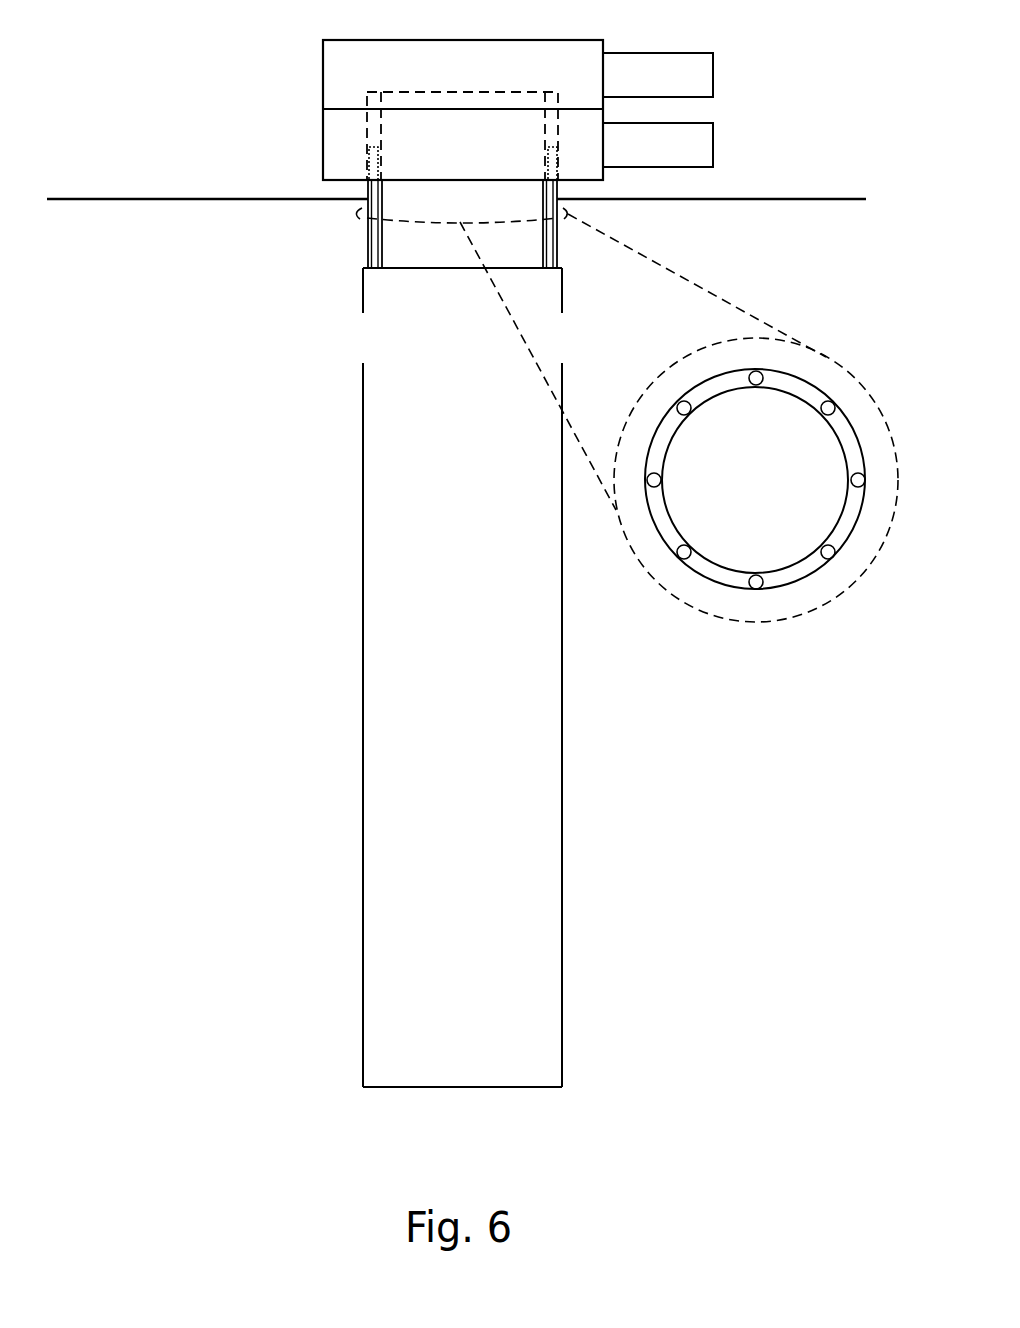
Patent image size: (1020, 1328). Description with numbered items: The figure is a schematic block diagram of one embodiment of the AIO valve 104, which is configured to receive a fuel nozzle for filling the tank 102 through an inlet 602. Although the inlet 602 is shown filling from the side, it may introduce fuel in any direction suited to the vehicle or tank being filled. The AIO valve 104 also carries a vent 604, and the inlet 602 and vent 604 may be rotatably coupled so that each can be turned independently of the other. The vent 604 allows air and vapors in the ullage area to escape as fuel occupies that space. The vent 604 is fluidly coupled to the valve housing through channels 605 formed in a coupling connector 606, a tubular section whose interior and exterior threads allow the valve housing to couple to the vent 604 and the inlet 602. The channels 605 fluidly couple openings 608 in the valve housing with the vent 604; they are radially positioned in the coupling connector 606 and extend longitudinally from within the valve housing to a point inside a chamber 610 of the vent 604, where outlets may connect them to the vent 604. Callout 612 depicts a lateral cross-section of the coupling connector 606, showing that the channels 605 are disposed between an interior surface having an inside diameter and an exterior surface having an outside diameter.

The AIO valve 104 is at (94, 66).
The tank 102 is at (182, 199).
The inlet 602 is at (713, 73).
The vent 604 is at (713, 147).
The chamber 610 is at (359, 155).
The channels 605 is at (558, 190).
The coupling connector 606 is at (367, 240).
The openings 608 is at (365, 348).
The callout 612 is at (708, 291).